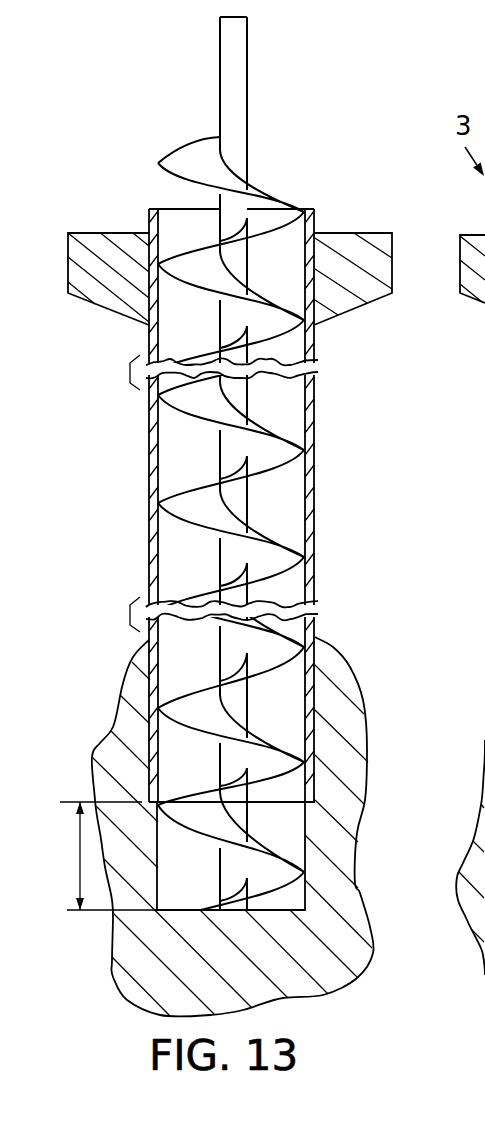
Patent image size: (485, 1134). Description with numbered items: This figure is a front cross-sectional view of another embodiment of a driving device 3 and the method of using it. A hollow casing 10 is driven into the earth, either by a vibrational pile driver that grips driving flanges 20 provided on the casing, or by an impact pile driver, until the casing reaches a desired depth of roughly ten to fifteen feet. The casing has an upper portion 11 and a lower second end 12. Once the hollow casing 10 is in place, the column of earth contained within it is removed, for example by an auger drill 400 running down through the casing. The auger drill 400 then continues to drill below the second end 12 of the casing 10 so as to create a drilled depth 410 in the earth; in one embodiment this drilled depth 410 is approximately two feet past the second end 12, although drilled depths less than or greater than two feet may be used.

The driving device 3 is at (91, 173).
The hollow casing 10 is at (314, 391).
The upper end of casing 11 is at (150, 208).
The second end 12 is at (314, 806).
The driving flanges 20 is at (352, 244).
The auger drill 400 is at (292, 502).
The drilled depth 410 is at (80, 857).